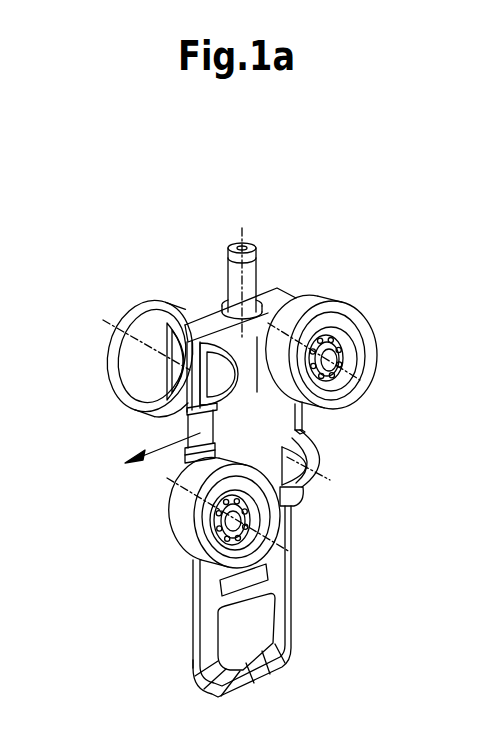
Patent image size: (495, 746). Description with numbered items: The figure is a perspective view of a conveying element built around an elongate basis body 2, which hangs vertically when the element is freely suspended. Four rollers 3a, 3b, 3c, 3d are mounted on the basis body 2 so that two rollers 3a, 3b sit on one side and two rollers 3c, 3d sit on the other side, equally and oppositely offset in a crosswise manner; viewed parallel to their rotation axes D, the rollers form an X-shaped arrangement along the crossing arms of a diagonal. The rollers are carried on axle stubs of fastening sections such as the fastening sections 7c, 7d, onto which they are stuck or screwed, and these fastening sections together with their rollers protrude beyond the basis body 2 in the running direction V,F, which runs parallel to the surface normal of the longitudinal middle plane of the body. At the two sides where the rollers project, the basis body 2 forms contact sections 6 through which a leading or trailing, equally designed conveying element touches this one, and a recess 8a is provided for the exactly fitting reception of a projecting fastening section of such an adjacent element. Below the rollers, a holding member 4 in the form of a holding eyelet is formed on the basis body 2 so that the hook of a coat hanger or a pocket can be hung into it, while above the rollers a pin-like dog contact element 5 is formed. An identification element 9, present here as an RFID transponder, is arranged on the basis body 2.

The basis body 2 is at (278, 558).
The roller 3a is at (325, 305).
The roller 3b is at (183, 538).
The roller 3c is at (122, 352).
The roller 3d is at (307, 420).
The holding member 4 is at (285, 637).
The dog contact element 5 is at (249, 268).
The contact section 6 is at (183, 457).
The fastening section 7c is at (180, 380).
The fastening section 7d is at (300, 452).
The recess 8a is at (172, 335).
The identification element 9 is at (223, 590).
The rotation axis D is at (107, 325).
The running direction V,F is at (172, 447).